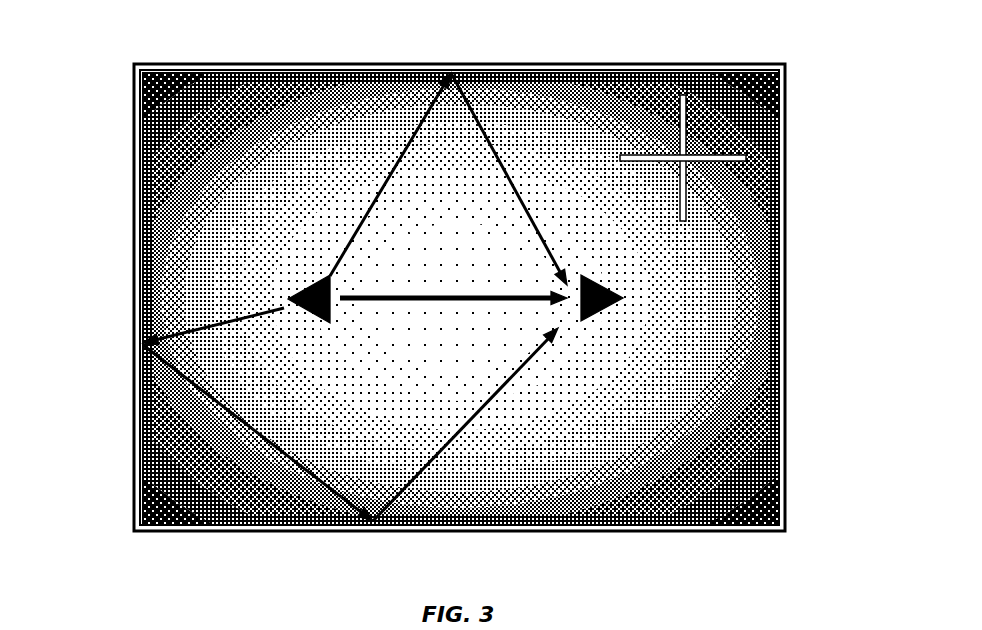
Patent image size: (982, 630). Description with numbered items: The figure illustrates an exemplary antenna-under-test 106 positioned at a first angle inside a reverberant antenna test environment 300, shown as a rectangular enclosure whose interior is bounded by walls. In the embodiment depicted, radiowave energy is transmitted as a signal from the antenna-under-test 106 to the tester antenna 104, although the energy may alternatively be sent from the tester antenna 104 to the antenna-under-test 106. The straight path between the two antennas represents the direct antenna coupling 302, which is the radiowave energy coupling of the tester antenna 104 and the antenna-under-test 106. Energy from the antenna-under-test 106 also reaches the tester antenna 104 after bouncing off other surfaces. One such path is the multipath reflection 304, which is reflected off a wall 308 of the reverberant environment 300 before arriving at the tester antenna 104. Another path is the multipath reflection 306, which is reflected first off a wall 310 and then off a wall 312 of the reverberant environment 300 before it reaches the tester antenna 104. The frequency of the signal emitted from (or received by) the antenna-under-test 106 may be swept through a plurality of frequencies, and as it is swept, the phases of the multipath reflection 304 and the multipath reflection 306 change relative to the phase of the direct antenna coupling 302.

The reverberant antenna test environment 300 is at (708, 32).
The direct antenna coupling 302 is at (422, 293).
The multipath reflection 304 is at (515, 205).
The multipath reflection 306 is at (500, 372).
The wall 308 is at (443, 62).
The wall 310 is at (127, 336).
The wall 312 is at (365, 518).
The tester antenna 104 is at (600, 297).
The antenna-under-test 106 is at (309, 266).